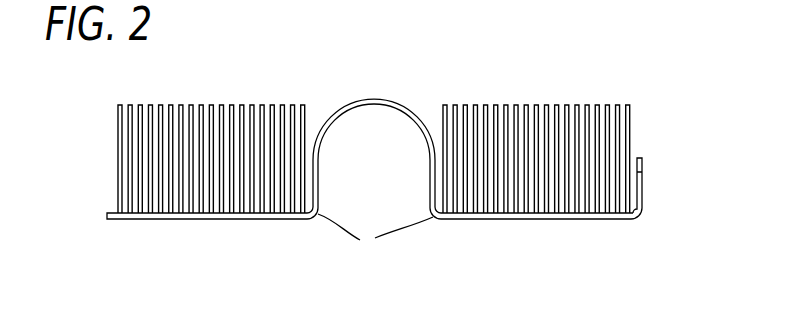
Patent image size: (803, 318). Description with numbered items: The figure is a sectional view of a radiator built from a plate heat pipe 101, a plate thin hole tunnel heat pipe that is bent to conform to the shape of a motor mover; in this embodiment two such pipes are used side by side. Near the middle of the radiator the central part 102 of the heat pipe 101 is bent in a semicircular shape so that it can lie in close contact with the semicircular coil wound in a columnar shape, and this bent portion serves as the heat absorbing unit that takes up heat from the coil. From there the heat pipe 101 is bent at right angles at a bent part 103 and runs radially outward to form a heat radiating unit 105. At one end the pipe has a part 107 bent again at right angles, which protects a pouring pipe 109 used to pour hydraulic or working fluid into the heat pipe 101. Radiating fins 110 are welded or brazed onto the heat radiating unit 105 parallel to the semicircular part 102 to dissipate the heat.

The plate heat pipe 101 is at (203, 217).
The central part 102 is at (355, 101).
The bent part 103 is at (375, 242).
The heat radiating unit 105 is at (152, 217).
The part bent at right angles 107 is at (636, 216).
The pouring pipe 109 is at (642, 160).
The radiating fins 110 is at (180, 105).